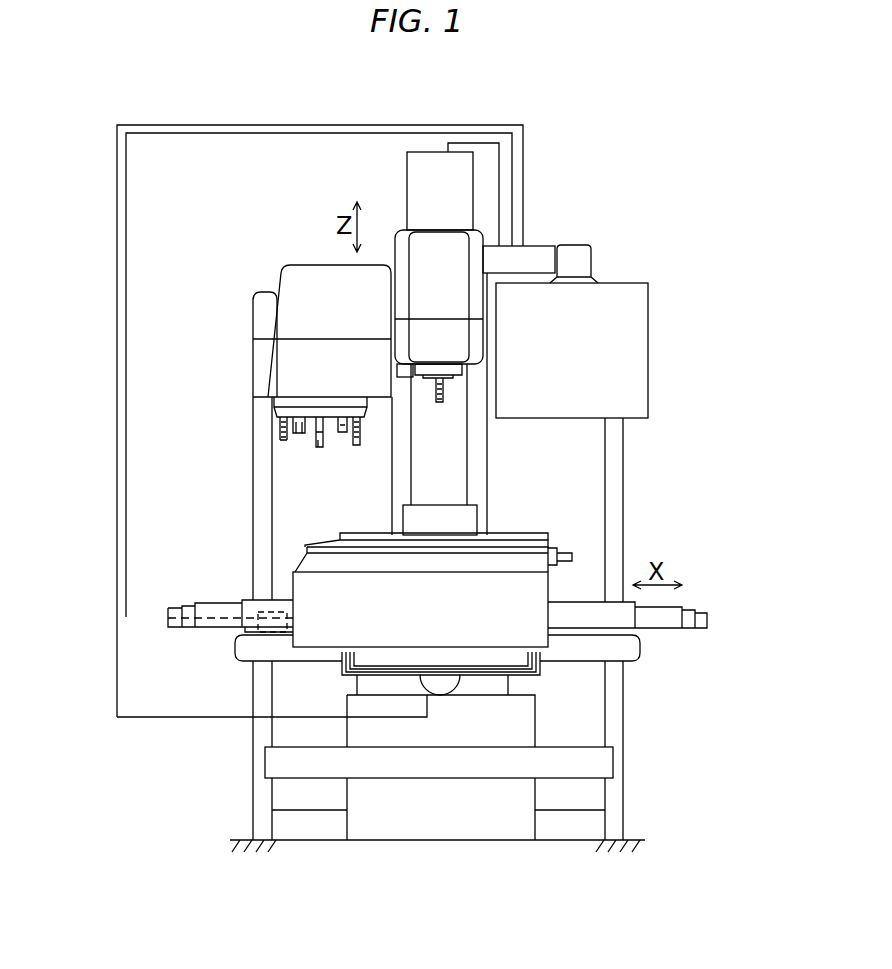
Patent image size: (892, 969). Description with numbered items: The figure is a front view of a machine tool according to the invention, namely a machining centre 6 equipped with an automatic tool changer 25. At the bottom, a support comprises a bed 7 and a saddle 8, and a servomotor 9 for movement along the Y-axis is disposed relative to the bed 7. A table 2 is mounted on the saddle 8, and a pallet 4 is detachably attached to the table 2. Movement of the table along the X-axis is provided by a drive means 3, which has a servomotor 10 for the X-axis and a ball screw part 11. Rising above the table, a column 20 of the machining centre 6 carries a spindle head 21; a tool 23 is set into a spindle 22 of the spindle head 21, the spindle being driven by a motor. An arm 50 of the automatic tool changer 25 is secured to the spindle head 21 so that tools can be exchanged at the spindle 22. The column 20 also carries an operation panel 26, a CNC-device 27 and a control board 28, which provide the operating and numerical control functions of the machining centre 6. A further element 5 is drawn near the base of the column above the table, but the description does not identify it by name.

The table 2 is at (302, 557).
The drive means 3 is at (273, 643).
The pallet 4 is at (353, 533).
The column base 5 is at (465, 525).
The machining centre 6 is at (659, 311).
The bed 7 is at (495, 828).
The saddle 8 is at (542, 670).
The servomotor 9 is at (445, 683).
The servomotor 10 is at (262, 630).
The ball screw part 11 is at (287, 626).
The column 20 is at (253, 535).
The spindle head 21 is at (472, 255).
The spindle 22 is at (458, 377).
The tool 23 is at (445, 400).
The automatic tool changer 25 is at (290, 348).
The operation panel 26 is at (618, 290).
The CNC-device 27 is at (625, 446).
The control board 28 is at (253, 450).
The arm 50 is at (400, 377).